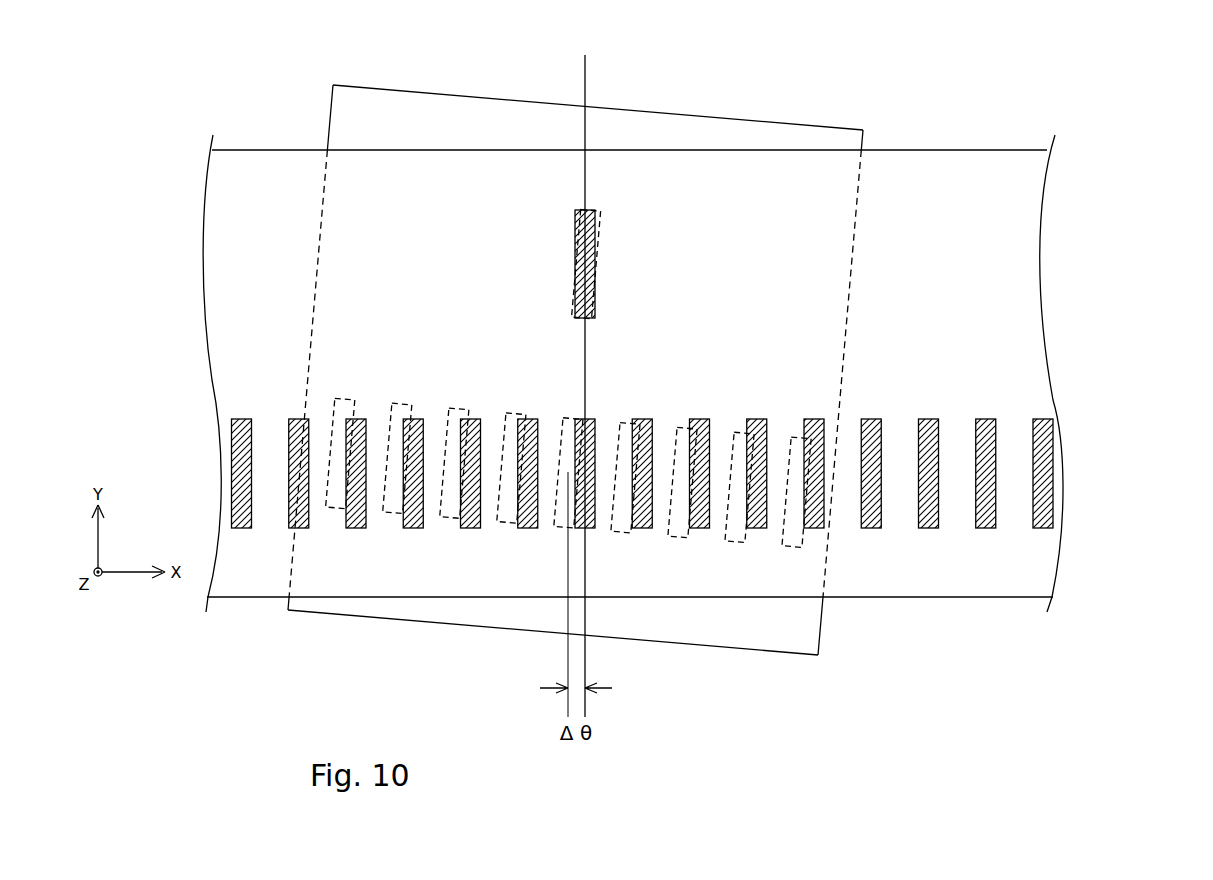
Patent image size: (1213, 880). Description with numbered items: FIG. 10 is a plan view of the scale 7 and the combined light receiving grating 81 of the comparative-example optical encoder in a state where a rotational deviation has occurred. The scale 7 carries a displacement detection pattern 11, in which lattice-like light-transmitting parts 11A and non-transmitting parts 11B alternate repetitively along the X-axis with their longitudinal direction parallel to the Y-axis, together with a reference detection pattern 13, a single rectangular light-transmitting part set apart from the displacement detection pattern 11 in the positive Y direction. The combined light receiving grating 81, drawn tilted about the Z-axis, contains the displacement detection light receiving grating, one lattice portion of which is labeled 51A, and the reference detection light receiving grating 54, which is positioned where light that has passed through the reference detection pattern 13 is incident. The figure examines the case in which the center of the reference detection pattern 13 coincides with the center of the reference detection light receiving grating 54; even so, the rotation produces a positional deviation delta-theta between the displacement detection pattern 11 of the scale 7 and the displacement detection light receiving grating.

The scale 7 is at (995, 150).
The displacement detection pattern 11 is at (716, 473).
The light-transmitting parts 11A is at (1053, 450).
The non-transmitting parts 11B is at (1012, 488).
The reference detection pattern 13 is at (580, 210).
The electrode of mounted component (rotated) 51A is at (795, 549).
The reference detection light receiving grating 54 is at (599, 212).
The combined light receiving grating 81 is at (786, 126).